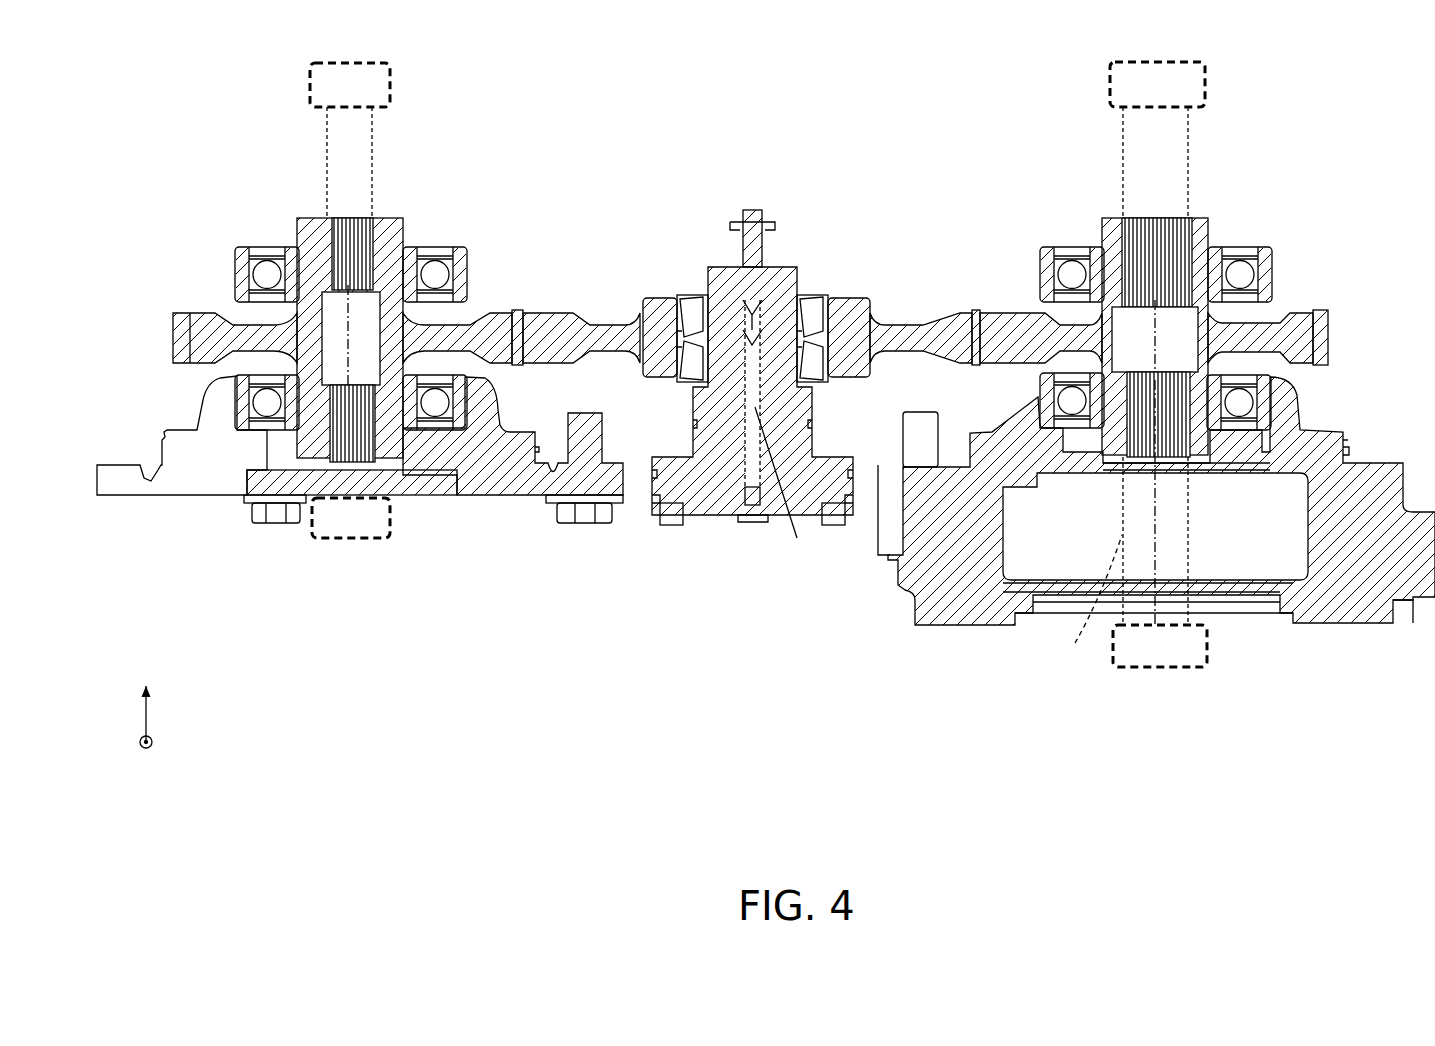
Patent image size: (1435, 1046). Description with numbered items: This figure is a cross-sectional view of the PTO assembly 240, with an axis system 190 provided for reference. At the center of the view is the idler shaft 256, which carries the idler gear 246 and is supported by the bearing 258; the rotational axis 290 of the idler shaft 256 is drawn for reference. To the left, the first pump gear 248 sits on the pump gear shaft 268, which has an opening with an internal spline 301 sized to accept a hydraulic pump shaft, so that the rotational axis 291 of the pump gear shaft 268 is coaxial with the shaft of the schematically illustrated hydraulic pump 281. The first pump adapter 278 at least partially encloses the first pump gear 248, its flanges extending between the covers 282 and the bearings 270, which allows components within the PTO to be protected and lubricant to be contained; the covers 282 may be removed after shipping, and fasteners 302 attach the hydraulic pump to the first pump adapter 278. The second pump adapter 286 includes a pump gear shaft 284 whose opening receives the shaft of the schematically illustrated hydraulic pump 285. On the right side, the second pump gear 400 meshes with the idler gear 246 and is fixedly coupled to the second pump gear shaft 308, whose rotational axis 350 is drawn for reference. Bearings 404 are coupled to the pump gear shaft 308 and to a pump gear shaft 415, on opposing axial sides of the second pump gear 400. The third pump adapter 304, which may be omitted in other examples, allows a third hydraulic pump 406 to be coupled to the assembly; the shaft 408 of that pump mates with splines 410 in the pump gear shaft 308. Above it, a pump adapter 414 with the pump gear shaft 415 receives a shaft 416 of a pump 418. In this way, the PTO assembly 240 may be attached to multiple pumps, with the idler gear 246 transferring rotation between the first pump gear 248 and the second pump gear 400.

The axis system 190 is at (172, 710).
The PTO assembly 240 is at (187, 210).
The idler gear 246 is at (536, 330).
The first pump gear 248 is at (195, 325).
The idler shaft 256 is at (783, 272).
The bearing 258 is at (688, 265).
The pump gear shaft 268 is at (397, 470).
The bearings 270 is at (256, 232).
The first pump adapter 278 is at (187, 347).
The hydraulic pump 281 is at (349, 560).
The covers 282 is at (490, 488).
The pump gear shaft 284 is at (390, 303).
The hydraulic pump 285 is at (343, 53).
The second pump adapter 286 is at (364, 289).
The rotational axis 290 is at (795, 483).
The rotational axis 291 is at (372, 312).
The spline 301 is at (341, 218).
The fasteners 302 is at (270, 512).
The third pump adapter 304 is at (1156, 556).
The second pump gear shaft 308 is at (1205, 470).
The rotational axis 350 is at (1135, 285).
The second pump gear 400 is at (1000, 328).
The bearings 404 is at (1025, 247).
The third hydraulic pump 406 is at (1152, 682).
The shaft 408 is at (1085, 597).
The splines 410 is at (1144, 218).
The pump adapter 414 is at (1192, 271).
The pump gear shaft 415 is at (1160, 301).
The shaft 416 is at (1145, 134).
The pump 418 is at (1135, 111).